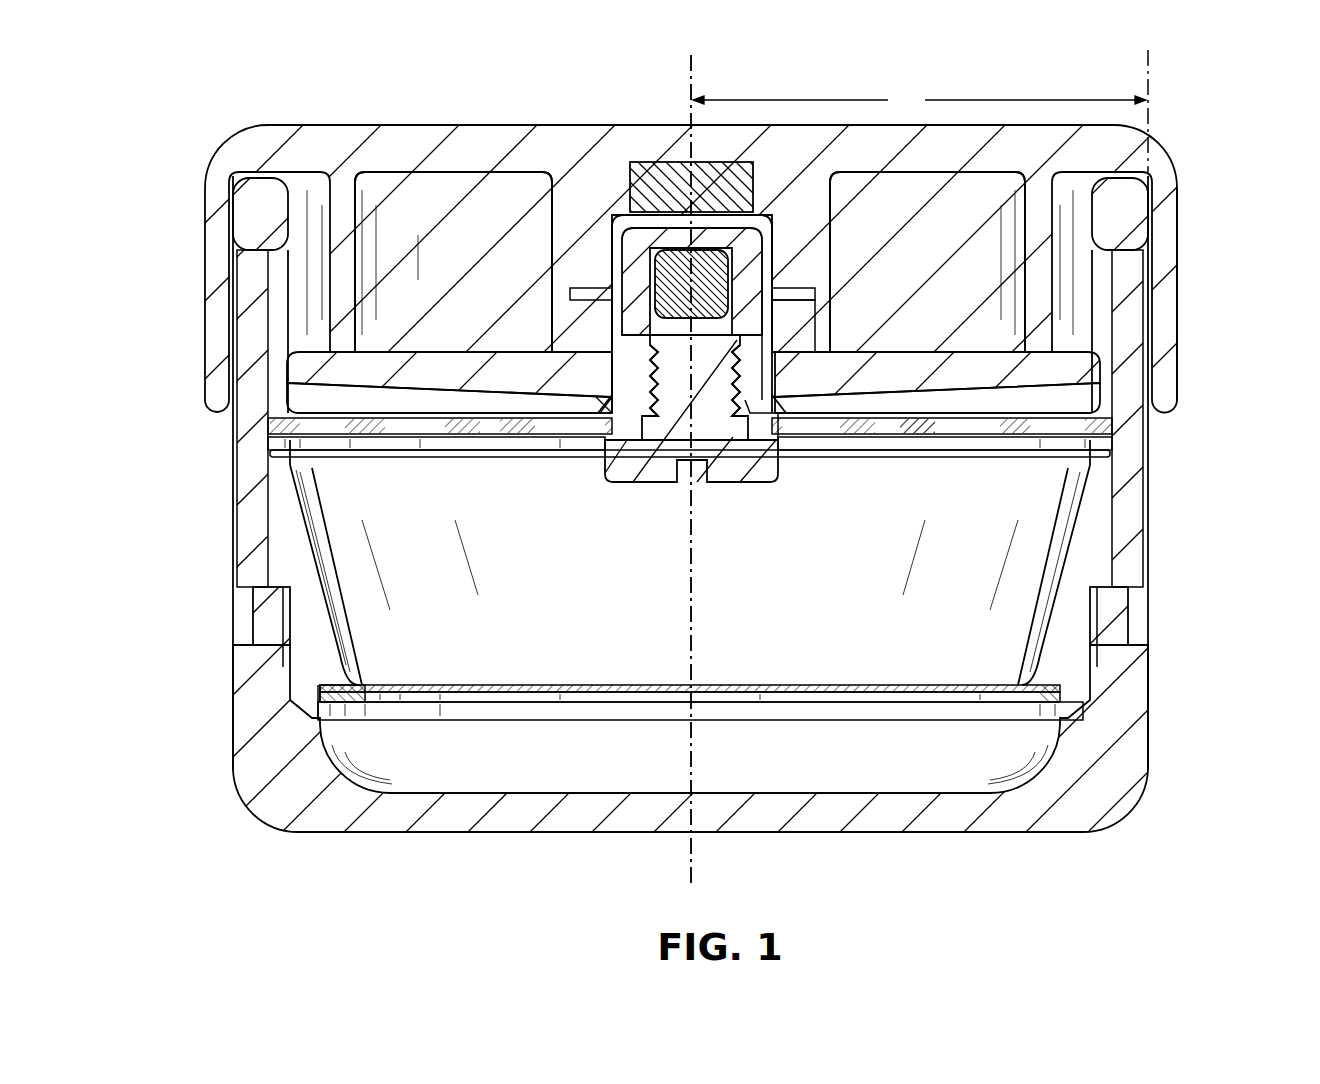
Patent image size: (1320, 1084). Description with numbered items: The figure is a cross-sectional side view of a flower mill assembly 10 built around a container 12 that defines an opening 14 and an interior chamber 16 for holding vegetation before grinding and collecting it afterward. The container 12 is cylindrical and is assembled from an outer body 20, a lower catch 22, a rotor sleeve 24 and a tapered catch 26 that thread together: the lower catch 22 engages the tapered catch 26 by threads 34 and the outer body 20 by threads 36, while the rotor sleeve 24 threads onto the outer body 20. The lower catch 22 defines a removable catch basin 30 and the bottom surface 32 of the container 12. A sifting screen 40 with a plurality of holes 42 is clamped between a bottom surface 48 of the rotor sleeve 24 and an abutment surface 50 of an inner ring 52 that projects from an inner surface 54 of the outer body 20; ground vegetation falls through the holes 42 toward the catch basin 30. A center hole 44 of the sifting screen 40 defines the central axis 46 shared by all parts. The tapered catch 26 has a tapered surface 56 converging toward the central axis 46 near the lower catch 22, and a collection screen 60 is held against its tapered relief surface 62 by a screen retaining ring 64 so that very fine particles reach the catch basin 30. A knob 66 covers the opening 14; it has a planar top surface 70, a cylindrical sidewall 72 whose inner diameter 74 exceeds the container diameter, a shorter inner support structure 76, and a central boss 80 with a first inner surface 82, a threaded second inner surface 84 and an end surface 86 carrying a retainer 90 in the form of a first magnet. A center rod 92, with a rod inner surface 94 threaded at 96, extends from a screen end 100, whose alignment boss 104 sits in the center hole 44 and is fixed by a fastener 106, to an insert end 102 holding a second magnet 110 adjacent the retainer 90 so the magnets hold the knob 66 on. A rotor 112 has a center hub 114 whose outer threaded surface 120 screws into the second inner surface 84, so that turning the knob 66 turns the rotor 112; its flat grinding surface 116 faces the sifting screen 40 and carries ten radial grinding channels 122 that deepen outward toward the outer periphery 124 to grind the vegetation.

The flower mill assembly 10 is at (213, 124).
The container 12 is at (232, 505).
The opening 14 is at (1084, 196).
The interior chamber 16 is at (690, 557).
The outer body 20 is at (234, 442).
The lower catch 22 is at (282, 678).
The rotor sleeve 24 is at (298, 210).
The tapered catch 26 is at (340, 636).
The catch basin 30 is at (690, 764).
The bottom surface 32 is at (540, 833).
The threads 34 is at (234, 717).
The threads 36 is at (1130, 614).
The sifting screen 40 is at (470, 440).
The holes 42 is at (342, 428).
The center hole 44 is at (746, 440).
The central axis 46 is at (689, 72).
The bottom surface 48 is at (305, 395).
The abutment surface 50 is at (292, 412).
The inner ring 52 is at (292, 462).
The inner surface 54 is at (320, 505).
The tapered surface 56 is at (1064, 563).
The collection screen 60 is at (817, 680).
The tapered relief surface 62 is at (1035, 700).
The screen retaining ring 64 is at (350, 704).
The knob 66 is at (400, 124).
The top surface 70 is at (973, 124).
The sidewall 72 is at (1178, 285).
The inner diameter 74 is at (919, 101).
The inner support structure 76 is at (1027, 248).
The central boss 80 is at (549, 206).
The first inner surface 82 is at (766, 265).
The second inner surface 84 is at (800, 322).
The end surface 86 is at (656, 186).
The retainer 90 is at (776, 222).
The center rod 92 is at (612, 250).
The rod inner surface 94 is at (736, 290).
The threaded inner surface 96 is at (736, 368).
The screen end 100 is at (610, 462).
The insert end 102 is at (615, 232).
The alignment boss 104 is at (663, 373).
The fastener 106 is at (770, 455).
The second magnet 110 is at (648, 328).
The rotor 112 is at (1000, 349).
The center hub 114 is at (762, 375).
The grinding surface 116 is at (970, 420).
The outer threaded surface 120 is at (813, 343).
The grinding channel 122 is at (1112, 410).
The outer periphery 124 is at (1100, 392).